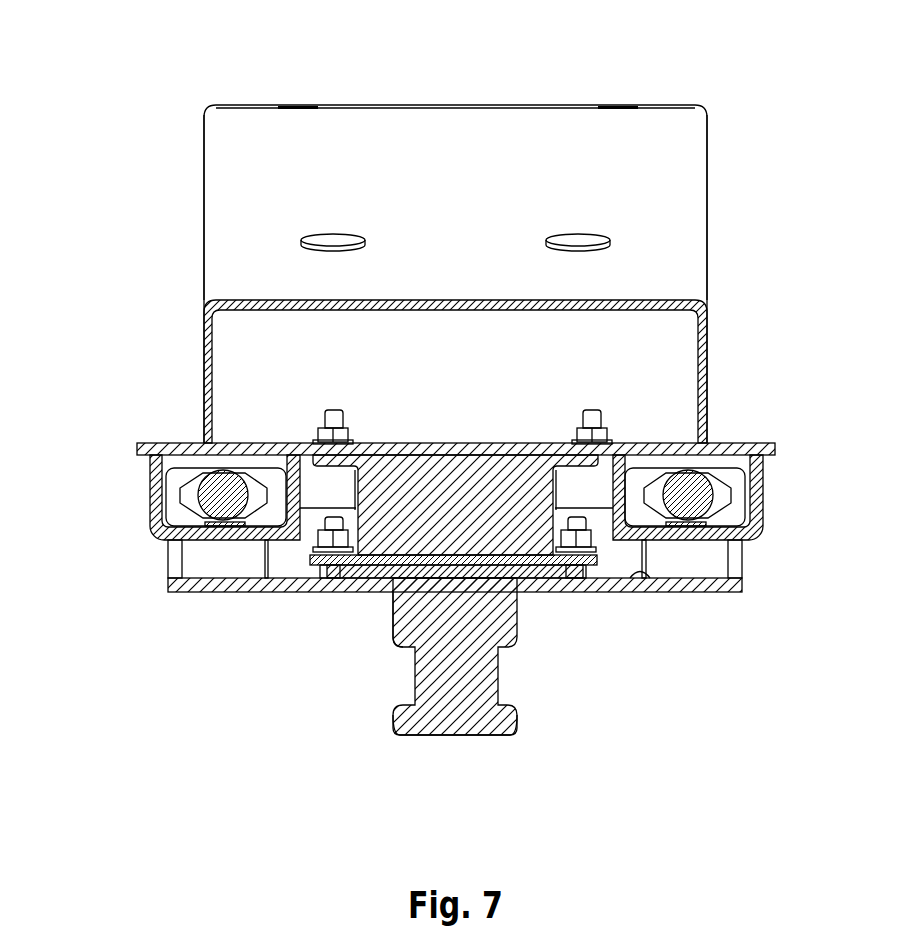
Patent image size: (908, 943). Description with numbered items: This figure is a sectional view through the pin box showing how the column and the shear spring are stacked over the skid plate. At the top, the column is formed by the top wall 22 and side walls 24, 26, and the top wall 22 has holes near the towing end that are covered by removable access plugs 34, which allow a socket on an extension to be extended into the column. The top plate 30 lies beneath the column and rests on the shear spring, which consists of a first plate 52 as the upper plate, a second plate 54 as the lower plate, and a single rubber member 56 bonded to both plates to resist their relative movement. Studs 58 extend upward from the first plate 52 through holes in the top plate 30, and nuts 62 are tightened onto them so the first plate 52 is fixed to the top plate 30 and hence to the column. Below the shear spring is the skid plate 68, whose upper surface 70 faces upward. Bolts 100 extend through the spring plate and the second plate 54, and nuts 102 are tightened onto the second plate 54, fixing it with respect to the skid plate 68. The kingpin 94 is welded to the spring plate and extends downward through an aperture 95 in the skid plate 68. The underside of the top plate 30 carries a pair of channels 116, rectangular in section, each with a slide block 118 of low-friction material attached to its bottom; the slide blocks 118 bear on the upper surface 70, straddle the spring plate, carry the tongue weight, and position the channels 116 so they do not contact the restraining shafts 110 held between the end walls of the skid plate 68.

The top wall 22 is at (440, 135).
The side wall 24 is at (204, 157).
The side wall 26 is at (708, 160).
The access plug 34 is at (325, 238).
The top plate 30 is at (760, 443).
The first plate 52 is at (347, 445).
The stud 58 is at (327, 418).
The nut 62 is at (318, 433).
The channel 116 is at (147, 503).
The restraining shaft 110 is at (212, 486).
The slide block 118 is at (195, 556).
The skid plate 68 is at (742, 588).
The bolt 100 is at (315, 527).
The nut 102 is at (318, 547).
The second plate 54 is at (340, 567).
The rubber member 56 is at (498, 570).
The aperture 95 is at (405, 600).
The kingpin 94 is at (458, 742).
The upper surface 70 is at (640, 575).